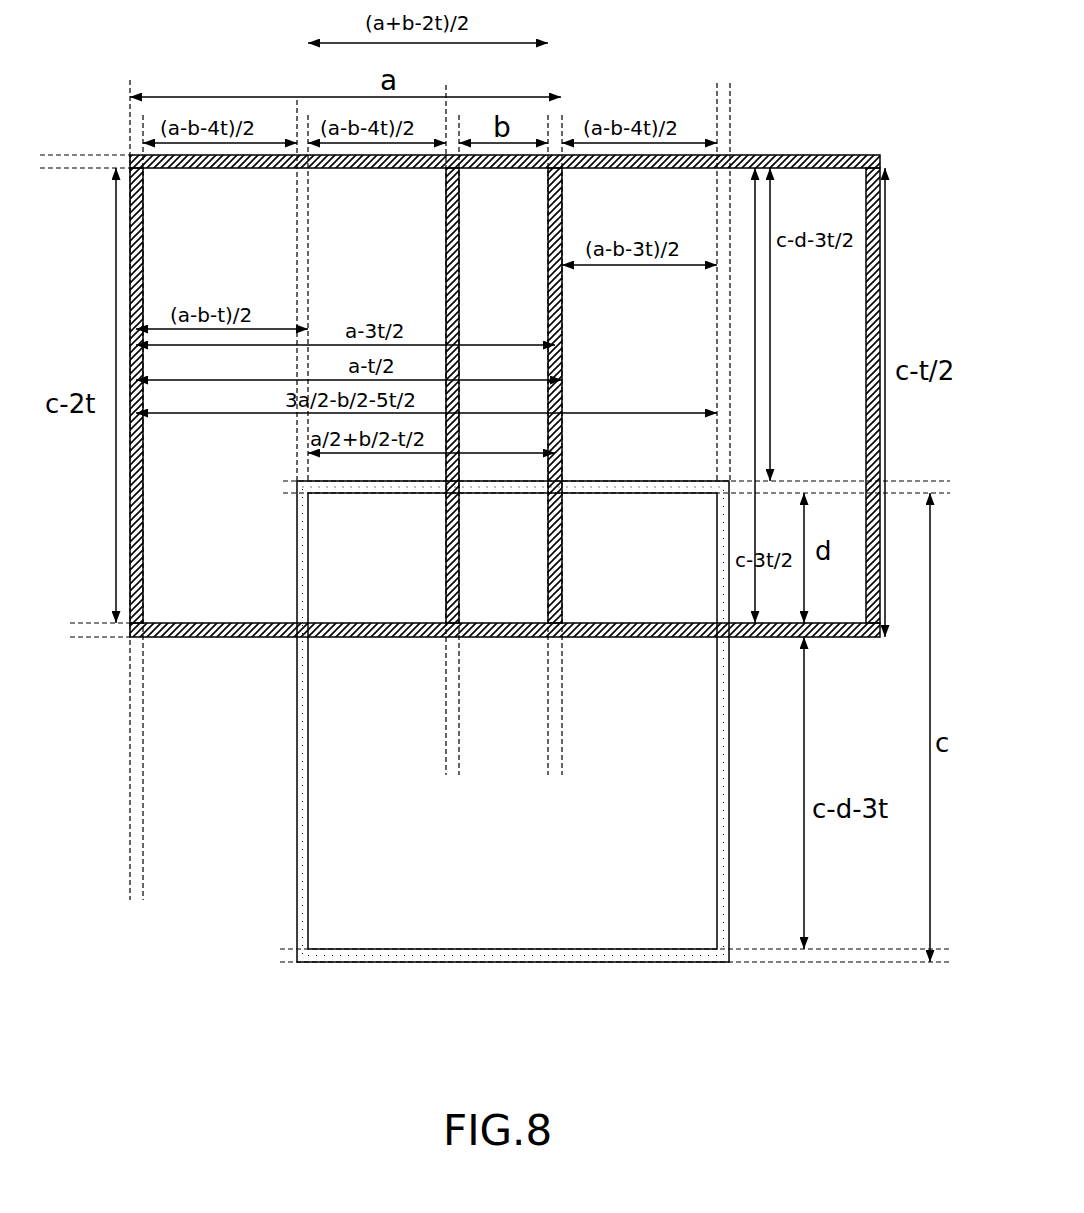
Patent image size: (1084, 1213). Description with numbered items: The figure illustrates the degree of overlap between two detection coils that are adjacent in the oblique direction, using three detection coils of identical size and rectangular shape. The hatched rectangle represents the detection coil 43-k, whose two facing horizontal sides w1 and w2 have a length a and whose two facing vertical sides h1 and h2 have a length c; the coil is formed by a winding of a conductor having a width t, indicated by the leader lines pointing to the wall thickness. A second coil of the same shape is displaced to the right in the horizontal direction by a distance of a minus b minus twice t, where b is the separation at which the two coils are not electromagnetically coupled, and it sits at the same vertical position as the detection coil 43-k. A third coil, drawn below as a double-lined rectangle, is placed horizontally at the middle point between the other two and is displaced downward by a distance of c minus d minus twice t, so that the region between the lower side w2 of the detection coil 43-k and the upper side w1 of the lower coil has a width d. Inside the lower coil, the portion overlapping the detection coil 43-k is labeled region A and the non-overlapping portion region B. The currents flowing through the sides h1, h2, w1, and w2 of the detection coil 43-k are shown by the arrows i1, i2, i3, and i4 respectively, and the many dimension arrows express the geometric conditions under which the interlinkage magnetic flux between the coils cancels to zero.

The detection coil 43-k is at (560, 708).
The horizontal side w1 is at (170, 168).
The horizontal side w2 is at (218, 637).
The vertical side h1 is at (143, 540).
The vertical side h2 is at (562, 362).
The conductor width t is at (548, 170).
The current i1 is at (157, 370).
The current i2 is at (535, 325).
The current i3 is at (280, 228).
The current i4 is at (278, 612).